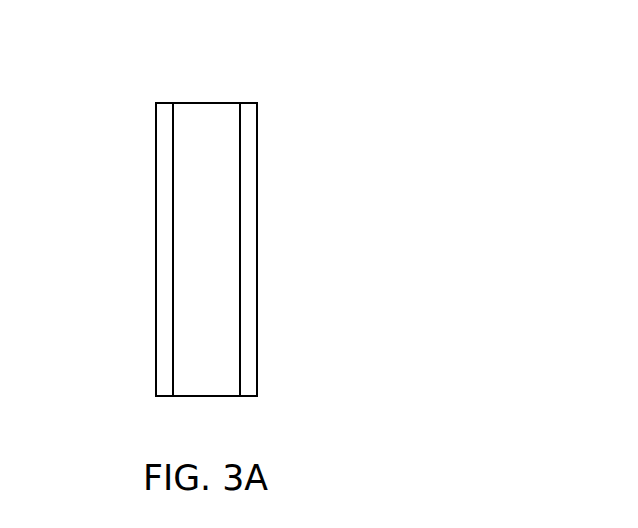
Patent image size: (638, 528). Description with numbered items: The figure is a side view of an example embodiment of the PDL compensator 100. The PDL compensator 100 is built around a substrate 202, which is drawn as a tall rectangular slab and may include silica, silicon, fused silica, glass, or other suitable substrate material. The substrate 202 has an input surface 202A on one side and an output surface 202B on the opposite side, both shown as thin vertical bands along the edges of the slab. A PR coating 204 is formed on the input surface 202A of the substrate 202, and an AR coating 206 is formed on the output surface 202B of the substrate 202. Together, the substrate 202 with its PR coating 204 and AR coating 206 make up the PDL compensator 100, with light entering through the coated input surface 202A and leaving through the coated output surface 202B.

The PDL compensator 100 is at (363, 60).
The substrate 202 is at (215, 99).
The input surface 202A is at (172, 153).
The output surface 202B is at (241, 152).
The PR coating 204 is at (157, 272).
The AR coating 206 is at (257, 270).